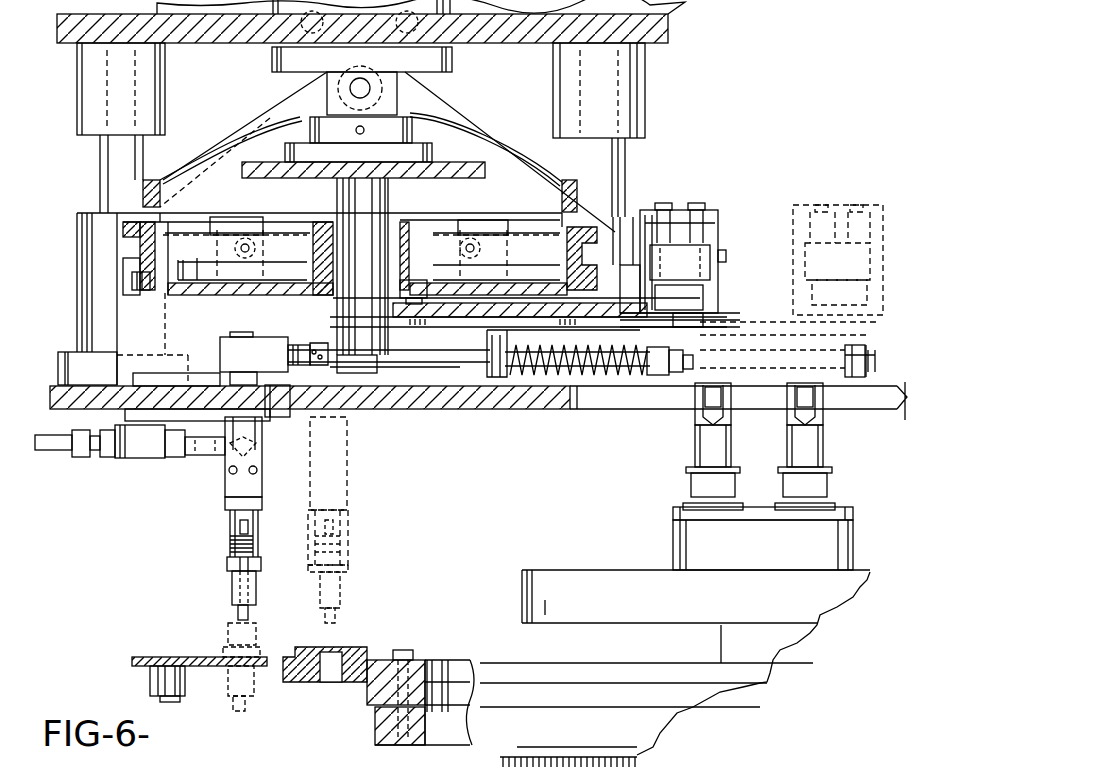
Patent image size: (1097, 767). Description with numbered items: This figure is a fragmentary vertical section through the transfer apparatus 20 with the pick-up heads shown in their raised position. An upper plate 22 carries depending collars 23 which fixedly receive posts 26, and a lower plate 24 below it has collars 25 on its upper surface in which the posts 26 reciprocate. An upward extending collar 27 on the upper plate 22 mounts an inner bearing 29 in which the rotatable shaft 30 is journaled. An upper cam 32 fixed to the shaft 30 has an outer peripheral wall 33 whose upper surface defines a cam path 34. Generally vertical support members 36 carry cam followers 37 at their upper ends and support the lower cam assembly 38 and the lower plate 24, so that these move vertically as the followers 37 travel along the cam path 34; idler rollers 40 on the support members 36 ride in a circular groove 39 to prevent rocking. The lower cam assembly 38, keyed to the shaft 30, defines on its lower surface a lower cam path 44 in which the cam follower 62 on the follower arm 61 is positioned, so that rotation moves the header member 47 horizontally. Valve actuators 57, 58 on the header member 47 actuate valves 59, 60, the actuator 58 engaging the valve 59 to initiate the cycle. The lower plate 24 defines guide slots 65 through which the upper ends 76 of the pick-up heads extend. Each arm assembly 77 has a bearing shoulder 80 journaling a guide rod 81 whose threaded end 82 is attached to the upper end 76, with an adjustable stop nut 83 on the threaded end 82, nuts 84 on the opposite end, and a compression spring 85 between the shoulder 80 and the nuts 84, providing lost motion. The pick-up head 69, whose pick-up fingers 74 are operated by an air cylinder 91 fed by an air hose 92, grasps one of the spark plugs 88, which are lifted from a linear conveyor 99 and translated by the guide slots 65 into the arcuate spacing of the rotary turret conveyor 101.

The transfer apparatus 20 is at (711, 21).
The upper plate 22 is at (672, 44).
The collars 23 is at (163, 90).
The lower plate 24 is at (90, 406).
The collars 25 is at (635, 220).
The posts 26 is at (100, 156).
The collar 27 is at (455, 12).
The inner bearing 29 is at (273, 55).
The rotatable shaft 30 is at (387, 180).
The upper cam 32 is at (238, 199).
The outer peripheral wall 33 is at (143, 192).
The cam path 34 is at (223, 136).
The support members 36 is at (462, 114).
The cam followers 37 is at (400, 98).
The lower cam assembly 38 is at (252, 308).
The circular groove 39 is at (135, 232).
The idler rollers 40 is at (247, 238).
The cam path 44 is at (133, 297).
The header member 47 is at (702, 301).
The valve actuator 57 is at (655, 235).
The valve actuator 58 is at (665, 241).
The valve 59 is at (705, 443).
The valve 60 is at (805, 428).
The follower arm 61 is at (513, 305).
The cam follower 62 is at (416, 280).
The guide slots 65 is at (303, 400).
The pick-up head 69 is at (209, 492).
The pick-up finger 74 is at (219, 544).
The upper end 76 is at (270, 374).
The arm assemblies 77 is at (483, 344).
The bearing shoulder 80 is at (495, 377).
The guide rod 81 is at (433, 365).
The threaded end 82 is at (315, 347).
The stop nut 83 is at (330, 338).
The nuts 84 is at (688, 375).
The compression spring 85 is at (613, 377).
The spark plugs 88 is at (237, 584).
The air cylinder 91 is at (143, 452).
The air hose 92 is at (45, 447).
The linear conveyor 99 is at (203, 657).
The rotary turret conveyor 101 is at (302, 648).